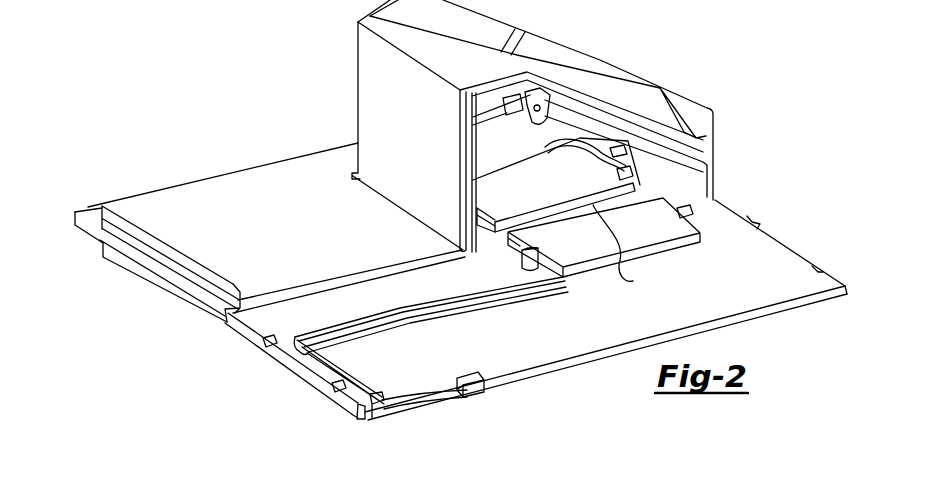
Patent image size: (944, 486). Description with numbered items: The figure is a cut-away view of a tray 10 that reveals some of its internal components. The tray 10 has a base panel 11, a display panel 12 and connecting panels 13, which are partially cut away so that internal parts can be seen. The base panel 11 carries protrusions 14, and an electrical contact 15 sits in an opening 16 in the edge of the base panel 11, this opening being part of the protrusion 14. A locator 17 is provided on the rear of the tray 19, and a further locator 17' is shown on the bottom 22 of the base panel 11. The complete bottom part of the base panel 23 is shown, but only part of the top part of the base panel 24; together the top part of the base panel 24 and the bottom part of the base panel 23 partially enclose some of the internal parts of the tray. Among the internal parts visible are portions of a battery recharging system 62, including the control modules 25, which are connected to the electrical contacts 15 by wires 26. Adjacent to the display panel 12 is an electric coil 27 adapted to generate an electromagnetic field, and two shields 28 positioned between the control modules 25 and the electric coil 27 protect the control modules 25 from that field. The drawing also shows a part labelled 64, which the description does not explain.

The tray 10 is at (205, 200).
The base panel 11 is at (742, 319).
The display panel 12 is at (607, 75).
The connecting panels 13 is at (368, 110).
The protrusion of the base panel 14 is at (593, 357).
The electrical contact 15 is at (433, 398).
The opening 16 is at (467, 388).
The locator 17 is at (155, 236).
The locator 17' is at (222, 336).
The rear of the tray 19 is at (127, 265).
The bottom of the base panel 22 is at (543, 371).
The bottom part of the base panel 23 is at (787, 292).
The top part of the base panel 24 is at (300, 270).
The control modules 25 is at (607, 264).
The wires 26 is at (322, 368).
The electric coil 27 is at (572, 98).
The shields 28 is at (633, 184).
The battery recharging system 62 is at (623, 115).
The flexible connector 64 is at (545, 146).